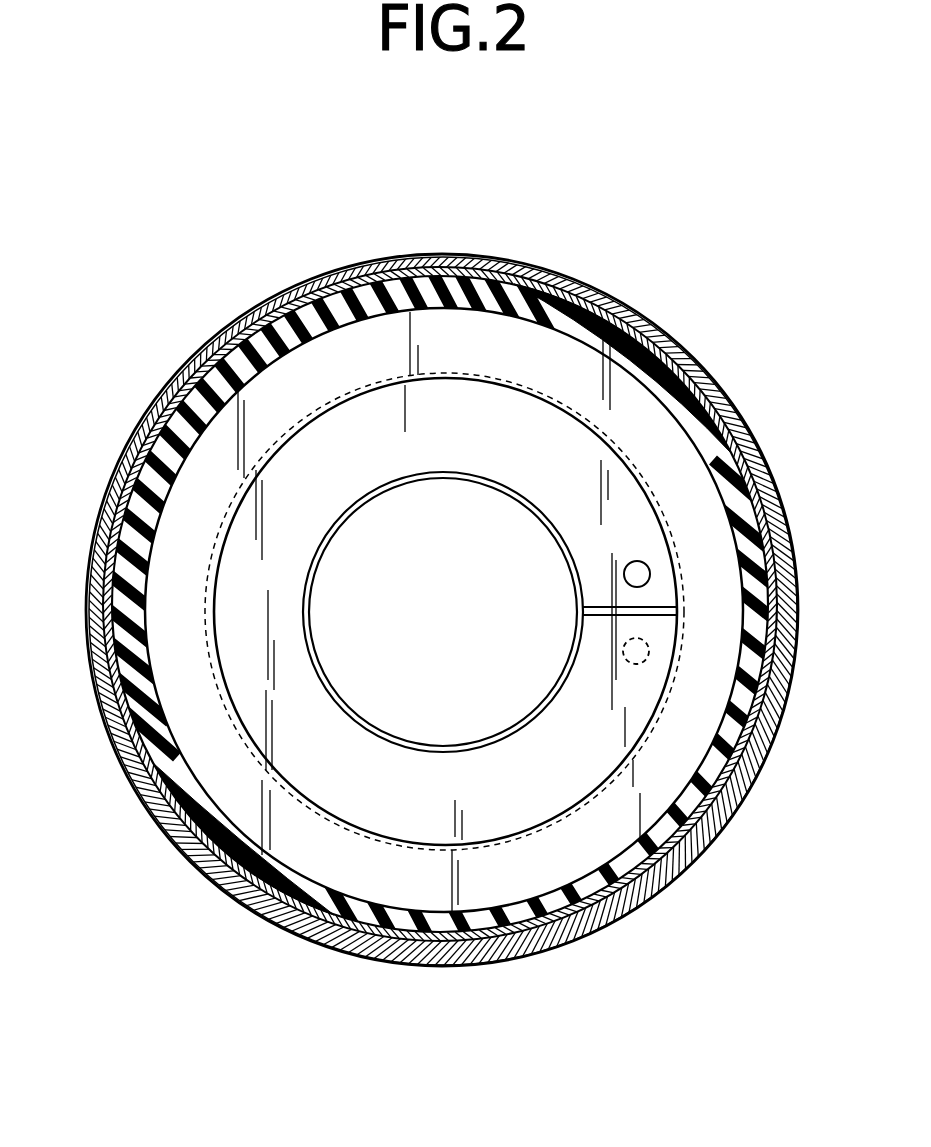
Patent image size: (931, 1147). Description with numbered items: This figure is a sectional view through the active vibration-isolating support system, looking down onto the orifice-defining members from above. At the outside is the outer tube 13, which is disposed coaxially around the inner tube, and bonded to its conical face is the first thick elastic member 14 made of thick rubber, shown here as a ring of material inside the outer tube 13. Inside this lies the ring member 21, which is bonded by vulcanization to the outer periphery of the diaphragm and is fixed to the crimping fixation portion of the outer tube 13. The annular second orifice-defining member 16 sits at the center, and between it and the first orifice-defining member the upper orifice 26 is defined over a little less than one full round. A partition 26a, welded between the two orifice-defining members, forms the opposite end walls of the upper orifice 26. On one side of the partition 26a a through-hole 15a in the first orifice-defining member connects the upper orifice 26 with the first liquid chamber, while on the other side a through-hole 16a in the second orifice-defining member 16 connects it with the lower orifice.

The outer tube 13 is at (650, 315).
The first thick elastic member 14 is at (453, 293).
The ring member 21 is at (265, 327).
The upper orifice 26 is at (514, 452).
The second orifice-defining member 16 is at (378, 500).
The through-hole 16a is at (623, 568).
The partition 26a is at (600, 614).
The through-hole 15a is at (623, 660).